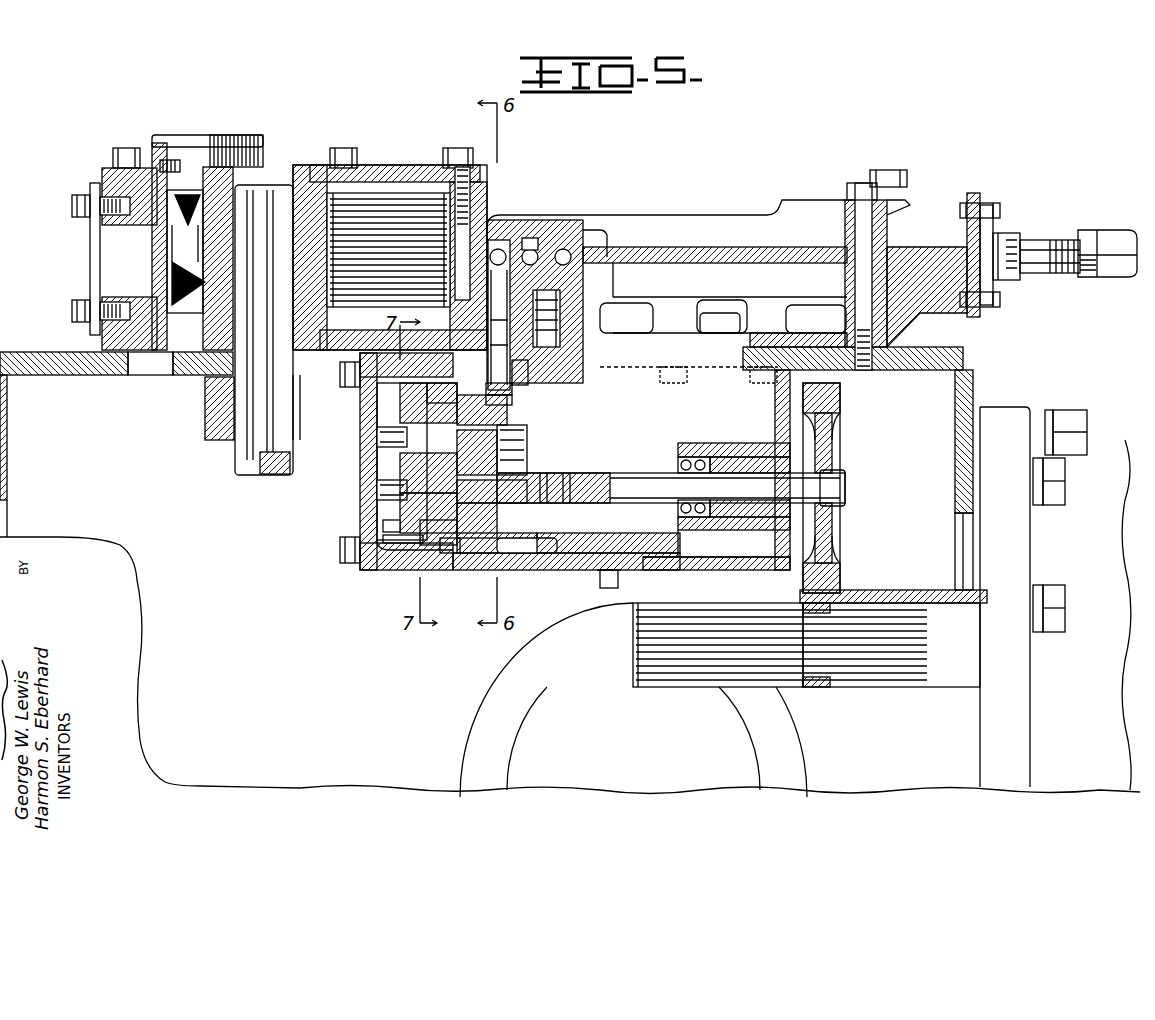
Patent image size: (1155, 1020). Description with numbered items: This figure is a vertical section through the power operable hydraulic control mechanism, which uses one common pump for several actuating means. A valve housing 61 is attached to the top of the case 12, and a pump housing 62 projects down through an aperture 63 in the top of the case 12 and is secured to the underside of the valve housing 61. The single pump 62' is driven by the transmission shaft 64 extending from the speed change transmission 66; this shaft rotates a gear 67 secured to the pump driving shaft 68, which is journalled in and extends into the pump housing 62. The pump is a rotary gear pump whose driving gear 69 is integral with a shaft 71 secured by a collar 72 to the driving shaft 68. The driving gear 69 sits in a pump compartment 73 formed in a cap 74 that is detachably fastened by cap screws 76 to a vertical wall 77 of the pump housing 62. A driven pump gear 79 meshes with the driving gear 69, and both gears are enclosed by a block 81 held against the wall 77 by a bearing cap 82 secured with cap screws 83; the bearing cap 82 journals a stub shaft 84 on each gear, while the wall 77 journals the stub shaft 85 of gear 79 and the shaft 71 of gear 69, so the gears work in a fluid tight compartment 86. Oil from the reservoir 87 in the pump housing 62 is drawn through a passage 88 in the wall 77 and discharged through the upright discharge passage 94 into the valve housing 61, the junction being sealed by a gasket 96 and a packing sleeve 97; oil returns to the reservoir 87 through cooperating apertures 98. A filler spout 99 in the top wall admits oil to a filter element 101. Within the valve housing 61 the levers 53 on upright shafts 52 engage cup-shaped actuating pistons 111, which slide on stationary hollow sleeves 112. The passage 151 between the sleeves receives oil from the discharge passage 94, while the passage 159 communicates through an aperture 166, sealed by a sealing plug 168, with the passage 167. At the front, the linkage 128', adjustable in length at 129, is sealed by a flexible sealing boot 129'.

The case 12 is at (32, 352).
The upright shaft 52 is at (260, 452).
The lever 53 is at (203, 247).
The valve housing 61 is at (783, 205).
The pump housing 62 is at (598, 583).
The pump 62' is at (390, 458).
The aperture 63 is at (838, 362).
The transmission shaft 64 is at (946, 662).
The speed change transmission 66 is at (1055, 478).
The gear 67 is at (835, 548).
The pump driving shaft 68 is at (845, 487).
The driving gear 69 is at (460, 500).
The shaft 71 is at (495, 540).
The collar 72 is at (590, 472).
The pump compartment 73 is at (380, 553).
The cap 74 is at (365, 512).
The cap screws 76 is at (348, 565).
The vertical wall 77 is at (495, 567).
The driven pump gear 79 is at (470, 400).
The block 81 is at (450, 545).
The bearing cap 82 is at (392, 532).
The cap screws 83 is at (400, 543).
The stub shaft 84 is at (395, 435).
The stub shaft 85 is at (500, 440).
The fluid tight compartment 86 is at (455, 543).
The reservoir 87 is at (660, 547).
The passage 88 is at (505, 548).
The discharge passage 94 is at (508, 275).
The gasket 96 is at (583, 357).
The packing sleeve 97 is at (528, 377).
The apertures 98 is at (715, 345).
The filler spout 99 is at (263, 146).
The filter element 101 is at (175, 272).
The actuating piston 111 is at (375, 205).
The stationary hollow sleeve 112 is at (488, 165).
The linkage 128' is at (1071, 274).
The adjustment 129 is at (1107, 215).
The flexible sealing boot 129' is at (1028, 222).
The passage 151 is at (498, 248).
The passage 159 is at (612, 223).
The aperture 166 is at (565, 250).
The passage 167 is at (532, 250).
The sealing plug 168 is at (575, 305).